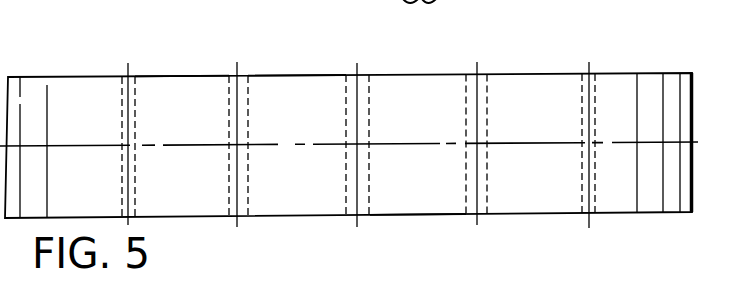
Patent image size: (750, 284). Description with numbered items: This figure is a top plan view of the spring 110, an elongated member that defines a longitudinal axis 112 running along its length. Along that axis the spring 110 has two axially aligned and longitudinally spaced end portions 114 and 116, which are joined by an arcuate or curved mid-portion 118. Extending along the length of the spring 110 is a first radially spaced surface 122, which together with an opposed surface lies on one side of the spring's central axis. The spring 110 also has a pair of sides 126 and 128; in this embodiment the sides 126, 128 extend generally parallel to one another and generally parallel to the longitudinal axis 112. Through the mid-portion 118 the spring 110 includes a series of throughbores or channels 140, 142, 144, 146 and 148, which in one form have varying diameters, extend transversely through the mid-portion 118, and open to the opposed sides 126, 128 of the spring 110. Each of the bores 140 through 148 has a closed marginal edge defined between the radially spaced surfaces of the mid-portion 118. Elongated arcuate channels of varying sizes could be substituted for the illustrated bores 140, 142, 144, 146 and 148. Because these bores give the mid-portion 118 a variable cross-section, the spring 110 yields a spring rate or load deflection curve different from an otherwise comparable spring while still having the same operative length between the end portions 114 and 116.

The spring 110 is at (504, 64).
The longitudinal axis 112 is at (280, 147).
The end portion 114 is at (43, 84).
The end portion 116 is at (670, 80).
The mid-portion 118 is at (315, 84).
The first radially spaced surface 122 is at (437, 195).
The side 126 is at (410, 215).
The side 128 is at (169, 78).
The throughbore 140 is at (127, 76).
The throughbore 142 is at (236, 72).
The throughbore 144 is at (367, 74).
The throughbore 146 is at (484, 217).
The throughbore 148 is at (594, 75).